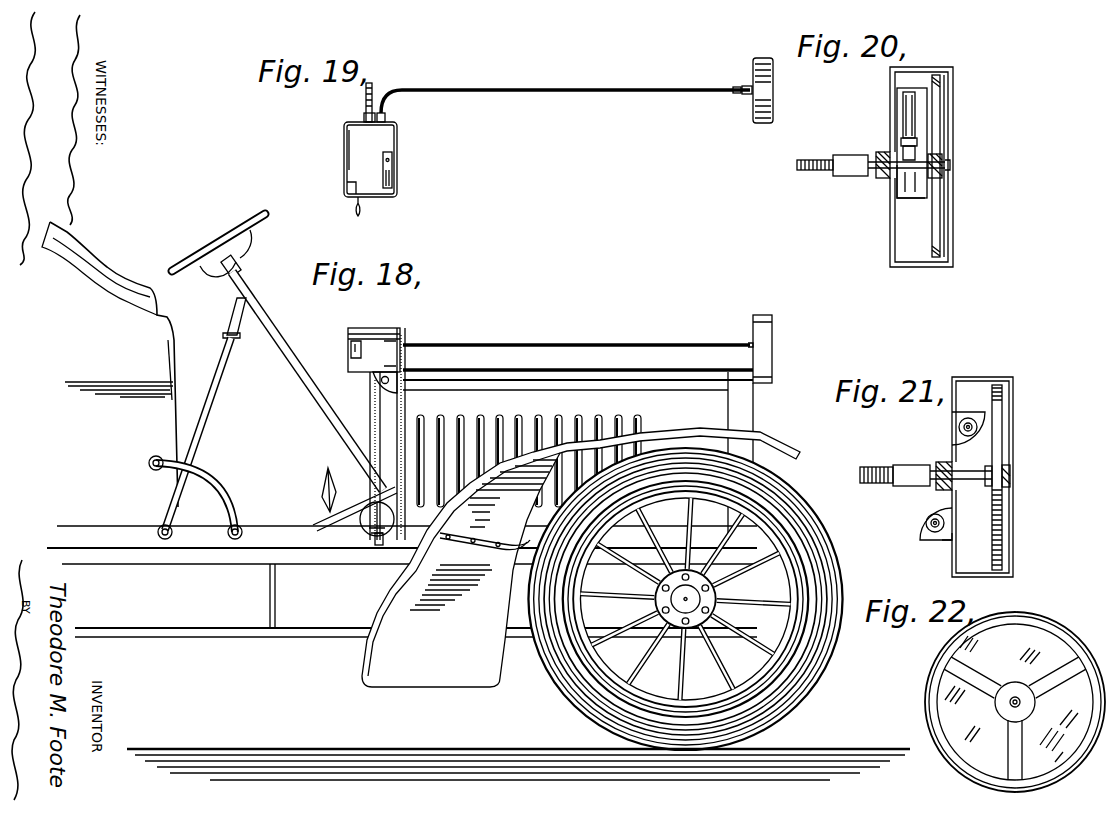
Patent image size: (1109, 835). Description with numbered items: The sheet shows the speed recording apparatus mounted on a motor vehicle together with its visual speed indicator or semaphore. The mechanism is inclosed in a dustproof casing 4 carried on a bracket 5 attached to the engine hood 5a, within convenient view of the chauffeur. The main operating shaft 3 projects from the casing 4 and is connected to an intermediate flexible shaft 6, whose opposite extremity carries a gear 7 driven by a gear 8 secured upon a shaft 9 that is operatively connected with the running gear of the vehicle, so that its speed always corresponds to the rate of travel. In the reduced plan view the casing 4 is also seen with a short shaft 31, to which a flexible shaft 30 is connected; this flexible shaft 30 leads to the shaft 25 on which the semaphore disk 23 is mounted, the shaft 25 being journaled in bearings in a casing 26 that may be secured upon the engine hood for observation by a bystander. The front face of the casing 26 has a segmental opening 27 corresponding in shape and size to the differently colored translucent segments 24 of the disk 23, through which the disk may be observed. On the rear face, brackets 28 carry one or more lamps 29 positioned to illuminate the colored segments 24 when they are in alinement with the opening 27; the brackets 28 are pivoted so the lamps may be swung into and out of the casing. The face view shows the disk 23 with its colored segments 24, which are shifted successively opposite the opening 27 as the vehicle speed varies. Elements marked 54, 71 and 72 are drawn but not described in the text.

In FIG. 19, the main operating shaft 3 is at (363, 118).
In FIG. 19, the casing 4 is at (385, 142).
In FIG. 18, the casing 4 is at (380, 318).
In FIG. 18, the bracket 5 is at (387, 387).
In FIG. 18, the engine hood 5a is at (405, 332).
In FIG. 19, the intermediate flexible shaft 6 is at (365, 92).
In FIG. 18, the intermediate flexible shaft 6 is at (370, 405).
In FIG. 18, the gear 7 is at (368, 515).
In FIG. 18, the gear 8 is at (379, 545).
In FIG. 18, the shaft 9 is at (362, 537).
In FIG. 20, the disk 23 is at (940, 95).
In FIG. 21, the disk 23 is at (997, 435).
In FIG. 22, the disk 23 is at (1087, 637).
In FIG. 22, the segments 24 is at (1008, 627).
In FIG. 20, the shaft 25 is at (882, 178).
In FIG. 21, the shaft 25 is at (965, 480).
In FIG. 20, the casing 26 is at (925, 268).
In FIG. 18, the casing 26 is at (772, 340).
In FIG. 21, the casing 26 is at (980, 377).
In FIG. 20, the segmental opening 27 is at (950, 135).
In FIG. 20, the brackets 28 is at (905, 198).
In FIG. 21, the brackets 28 is at (968, 412).
In FIG. 20, the lamps 29 is at (902, 138).
In FIG. 21, the lamps 29 is at (955, 540).
In FIG. 19, the flexible shaft 30 is at (545, 90).
In FIG. 20, the flexible shaft 30 is at (815, 177).
In FIG. 18, the flexible shaft 30 is at (605, 343).
In FIG. 21, the flexible shaft 30 is at (878, 467).
In FIG. 19, the short shaft 31 is at (385, 116).
In FIG. 19, the pendant 54 is at (362, 212).
In FIG. 19, the contact 71 is at (392, 160).
In FIG. 19, the contact 72 is at (392, 183).